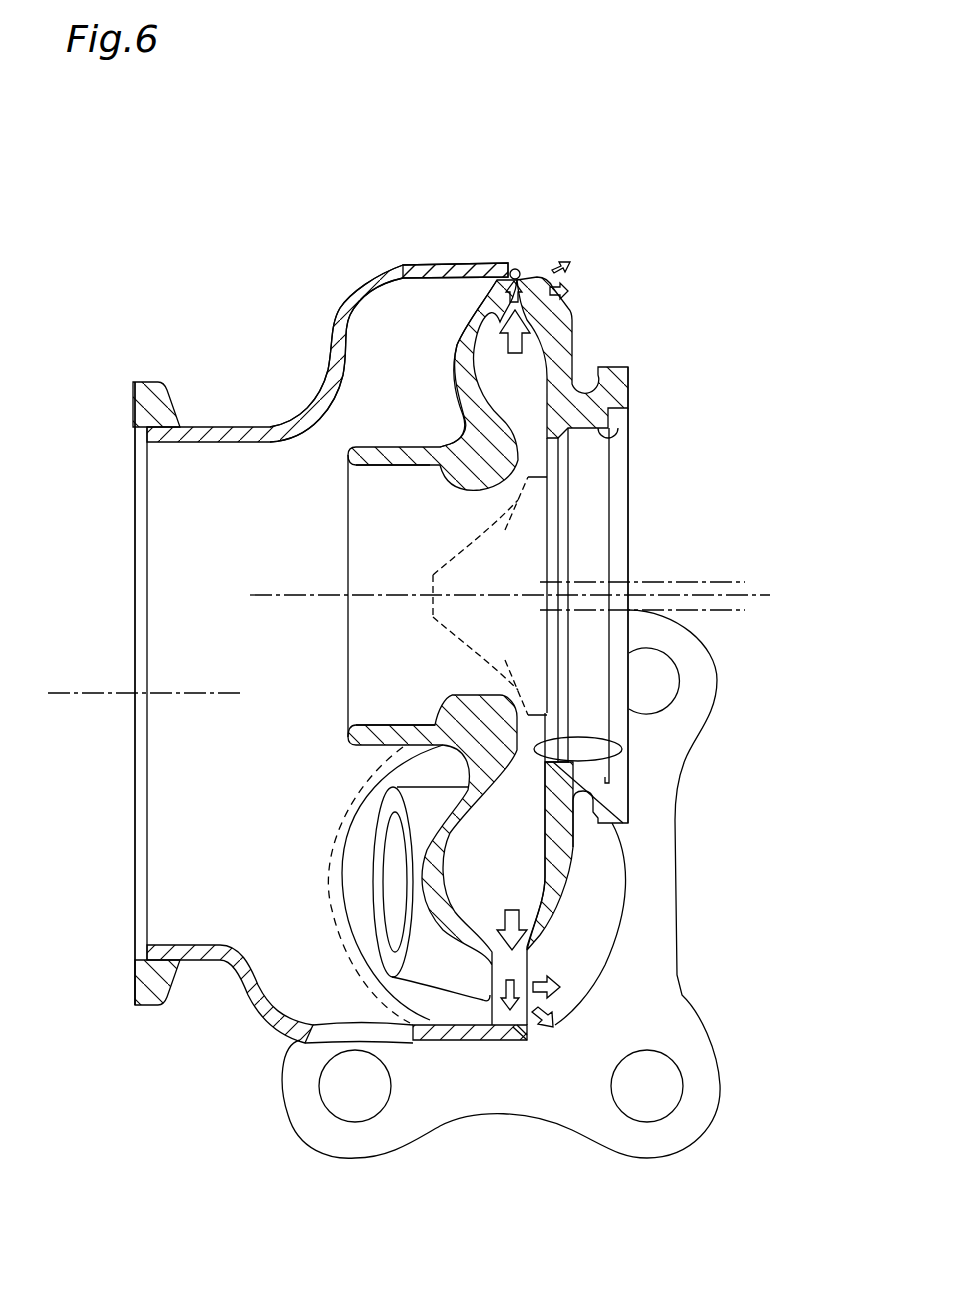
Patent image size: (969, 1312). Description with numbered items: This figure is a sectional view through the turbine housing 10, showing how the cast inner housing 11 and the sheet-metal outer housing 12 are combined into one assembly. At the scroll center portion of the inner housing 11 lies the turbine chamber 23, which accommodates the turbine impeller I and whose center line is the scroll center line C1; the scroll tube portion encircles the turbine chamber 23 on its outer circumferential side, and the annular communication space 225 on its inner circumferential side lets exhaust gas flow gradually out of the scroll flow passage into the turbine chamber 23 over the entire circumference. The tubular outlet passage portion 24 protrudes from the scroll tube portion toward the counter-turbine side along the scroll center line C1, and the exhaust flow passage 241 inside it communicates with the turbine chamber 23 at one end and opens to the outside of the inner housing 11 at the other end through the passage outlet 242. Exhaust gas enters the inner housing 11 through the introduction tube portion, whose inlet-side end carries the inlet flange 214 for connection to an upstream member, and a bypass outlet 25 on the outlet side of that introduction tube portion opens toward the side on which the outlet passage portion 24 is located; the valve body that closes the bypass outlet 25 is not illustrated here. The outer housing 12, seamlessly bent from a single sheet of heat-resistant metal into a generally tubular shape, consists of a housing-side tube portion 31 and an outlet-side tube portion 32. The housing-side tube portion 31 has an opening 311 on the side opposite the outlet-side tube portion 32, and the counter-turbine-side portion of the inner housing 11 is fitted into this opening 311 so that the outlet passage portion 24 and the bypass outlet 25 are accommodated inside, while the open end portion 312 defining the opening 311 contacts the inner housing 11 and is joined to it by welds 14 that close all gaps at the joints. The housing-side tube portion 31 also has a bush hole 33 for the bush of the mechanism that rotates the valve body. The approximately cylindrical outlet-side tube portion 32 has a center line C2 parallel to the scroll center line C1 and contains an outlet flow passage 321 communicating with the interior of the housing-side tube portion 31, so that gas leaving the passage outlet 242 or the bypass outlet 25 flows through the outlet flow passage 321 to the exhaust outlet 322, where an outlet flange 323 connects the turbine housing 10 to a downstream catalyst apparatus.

The turbine housing 10 is at (284, 216).
The inner housing 11 is at (632, 380).
The outer housing 12 is at (330, 323).
The welds 14 is at (517, 272).
The turbine chamber 23 is at (690, 447).
The outlet passage portion 24 is at (405, 445).
The bypass outlet 25 is at (385, 928).
The housing-side tube portion 31 is at (418, 260).
The outlet-side tube portion 32 is at (242, 425).
The bush hole 33 is at (320, 1026).
The inlet flange 214 is at (340, 1158).
The annular communication space 225 is at (630, 760).
The exhaust flow passage 241 is at (362, 468).
The passage outlet 242 is at (365, 722).
The opening 311 is at (498, 285).
The open end portion 312 is at (490, 1044).
The outlet flow passage 321 is at (185, 940).
The exhaust outlet 322 is at (147, 450).
The outlet flange 323 is at (157, 380).
The turbine impeller I is at (433, 572).
The scroll center line C1 is at (290, 600).
The center line C2 is at (74, 698).